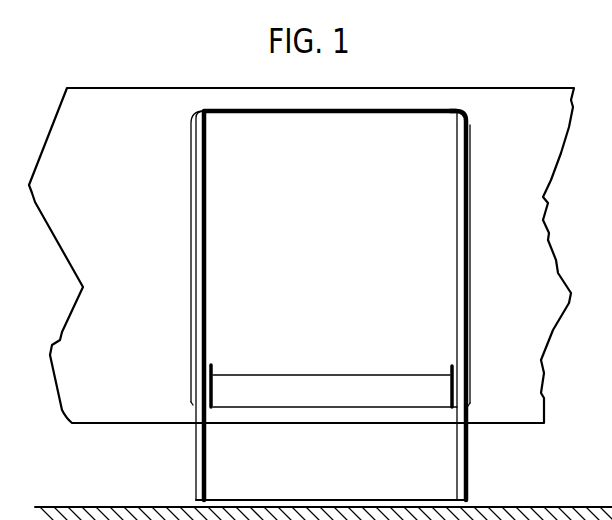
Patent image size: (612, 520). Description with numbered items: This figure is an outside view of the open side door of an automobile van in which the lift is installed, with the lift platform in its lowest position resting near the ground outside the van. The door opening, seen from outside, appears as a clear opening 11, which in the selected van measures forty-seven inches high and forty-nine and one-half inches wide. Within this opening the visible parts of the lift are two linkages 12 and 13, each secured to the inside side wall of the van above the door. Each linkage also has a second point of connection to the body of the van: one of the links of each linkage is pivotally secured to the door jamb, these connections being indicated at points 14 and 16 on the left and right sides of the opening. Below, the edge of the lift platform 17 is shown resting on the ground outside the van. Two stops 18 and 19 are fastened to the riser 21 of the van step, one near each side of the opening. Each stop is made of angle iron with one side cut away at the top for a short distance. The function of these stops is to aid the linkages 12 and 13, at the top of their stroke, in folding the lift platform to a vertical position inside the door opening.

The clear opening 11 is at (391, 114).
The linkage 12 is at (200, 202).
The linkage 13 is at (459, 207).
The pivot point 14 is at (193, 325).
The pivot point 16 is at (469, 325).
The edge of lift platform 17 is at (333, 502).
The stop 18 is at (213, 368).
The stop 19 is at (449, 368).
The riser 21 is at (361, 380).